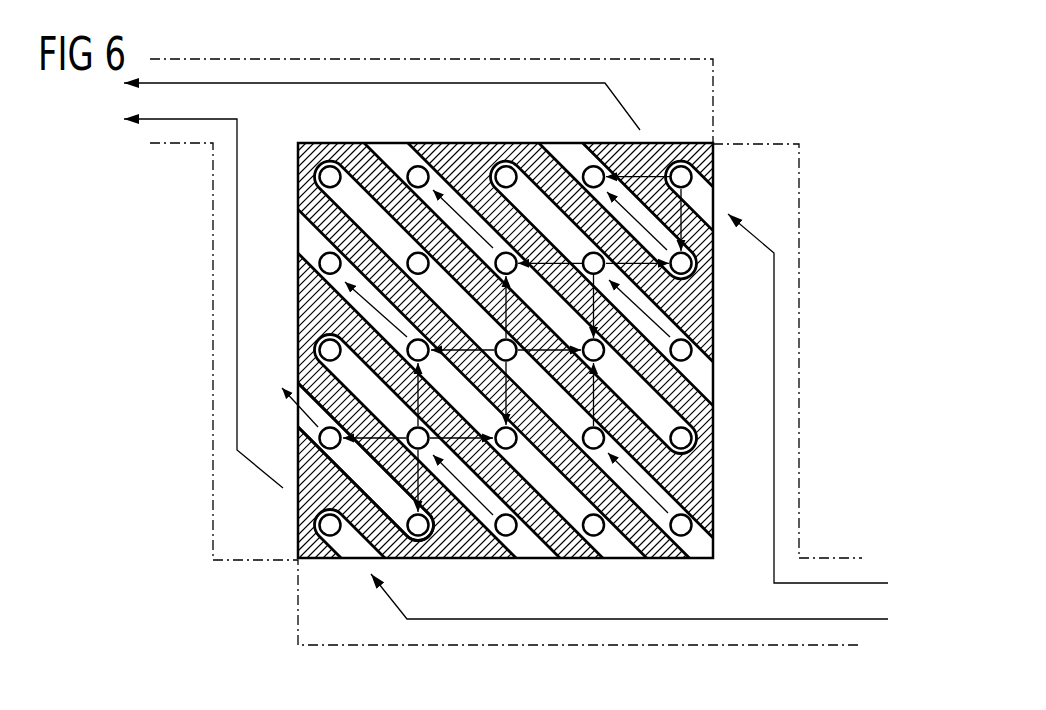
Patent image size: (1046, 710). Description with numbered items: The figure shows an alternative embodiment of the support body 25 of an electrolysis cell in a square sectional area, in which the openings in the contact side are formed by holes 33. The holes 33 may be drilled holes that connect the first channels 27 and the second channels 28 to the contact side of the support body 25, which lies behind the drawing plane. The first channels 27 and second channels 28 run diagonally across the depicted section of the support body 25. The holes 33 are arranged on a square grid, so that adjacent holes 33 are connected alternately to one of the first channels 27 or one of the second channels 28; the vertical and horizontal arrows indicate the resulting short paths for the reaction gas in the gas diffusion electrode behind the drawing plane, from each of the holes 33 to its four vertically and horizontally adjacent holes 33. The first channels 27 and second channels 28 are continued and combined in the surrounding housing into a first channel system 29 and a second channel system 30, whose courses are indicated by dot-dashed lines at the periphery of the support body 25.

The support body 25 is at (713, 428).
The first channels 27 is at (713, 378).
The second channels 28 is at (299, 244).
The first channel system 29 is at (784, 193).
The second channel system 30 is at (703, 87).
The holes 33 is at (328, 166).